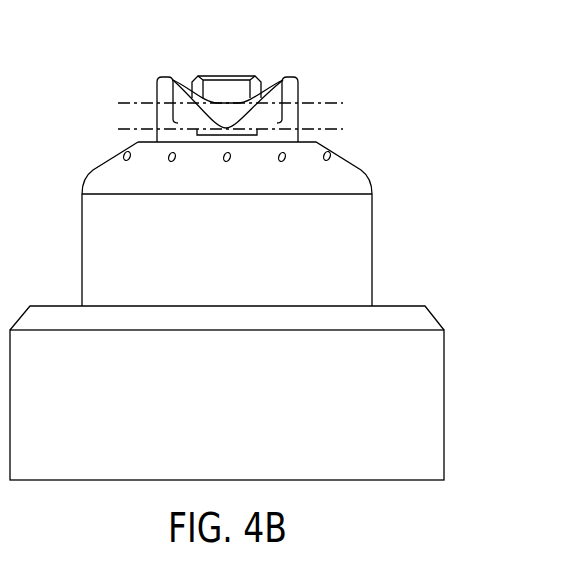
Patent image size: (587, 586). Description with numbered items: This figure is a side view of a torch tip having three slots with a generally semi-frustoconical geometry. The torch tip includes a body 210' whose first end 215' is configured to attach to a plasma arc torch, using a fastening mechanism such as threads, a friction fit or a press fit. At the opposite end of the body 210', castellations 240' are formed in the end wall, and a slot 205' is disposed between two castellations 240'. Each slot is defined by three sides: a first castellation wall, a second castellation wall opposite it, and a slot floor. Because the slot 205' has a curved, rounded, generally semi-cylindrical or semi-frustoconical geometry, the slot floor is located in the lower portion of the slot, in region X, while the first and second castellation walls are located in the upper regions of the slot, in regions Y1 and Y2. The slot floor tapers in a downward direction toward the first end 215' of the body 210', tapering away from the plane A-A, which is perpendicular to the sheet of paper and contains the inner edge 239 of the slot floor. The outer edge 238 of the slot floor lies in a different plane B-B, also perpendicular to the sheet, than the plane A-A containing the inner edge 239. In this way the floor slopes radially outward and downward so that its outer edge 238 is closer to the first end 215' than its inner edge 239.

The first end 215' is at (276, 393).
The body 210' is at (284, 224).
The castellation 240' is at (222, 60).
The inner edge of the slot floor 239 is at (262, 97).
The slot 205' is at (228, 135).
The outer edge of the slot floor 238 is at (213, 130).
The region X is at (220, 126).
The region Y1 is at (172, 83).
The region Y2 is at (284, 100).
The plane A-A is at (118, 102).
The plane B-B is at (118, 129).